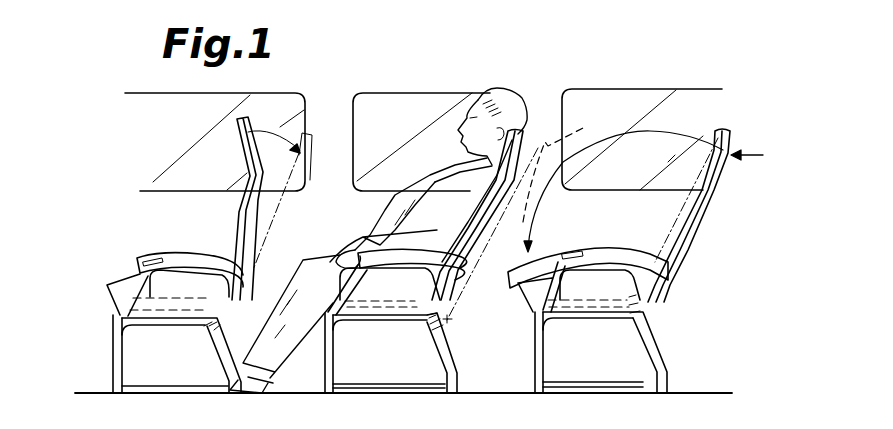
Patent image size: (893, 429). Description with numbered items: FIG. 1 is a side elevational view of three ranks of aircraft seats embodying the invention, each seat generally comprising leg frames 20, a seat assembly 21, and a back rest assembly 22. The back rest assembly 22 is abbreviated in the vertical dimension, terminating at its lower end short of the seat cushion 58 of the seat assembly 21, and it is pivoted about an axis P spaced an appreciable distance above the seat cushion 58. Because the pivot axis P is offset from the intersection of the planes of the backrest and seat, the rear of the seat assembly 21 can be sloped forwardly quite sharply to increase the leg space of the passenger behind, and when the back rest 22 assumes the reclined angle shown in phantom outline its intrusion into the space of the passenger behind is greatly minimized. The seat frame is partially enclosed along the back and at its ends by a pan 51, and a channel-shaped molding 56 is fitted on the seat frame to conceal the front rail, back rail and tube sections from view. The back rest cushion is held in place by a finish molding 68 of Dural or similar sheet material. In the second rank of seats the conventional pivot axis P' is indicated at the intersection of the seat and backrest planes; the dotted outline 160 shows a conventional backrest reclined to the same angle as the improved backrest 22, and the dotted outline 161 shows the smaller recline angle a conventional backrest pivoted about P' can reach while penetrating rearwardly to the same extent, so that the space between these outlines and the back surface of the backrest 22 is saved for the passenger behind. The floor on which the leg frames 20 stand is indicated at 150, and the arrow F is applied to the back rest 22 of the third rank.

The leg frames 20 is at (112, 345).
The seat assembly 21 is at (122, 279).
The back rest assembly 22 is at (238, 152).
The pan 51 is at (390, 287).
The channel-shaped molding 56 is at (120, 310).
The seat cushion 58 is at (530, 287).
The finish molding 68 is at (248, 132).
The floor 150 is at (645, 428).
The dotted outline 160 is at (608, 125).
The dotted outline 161 is at (547, 175).
The force F is at (747, 147).
The pivot axis P is at (421, 299).
The conventional pivot axis P' is at (462, 326).